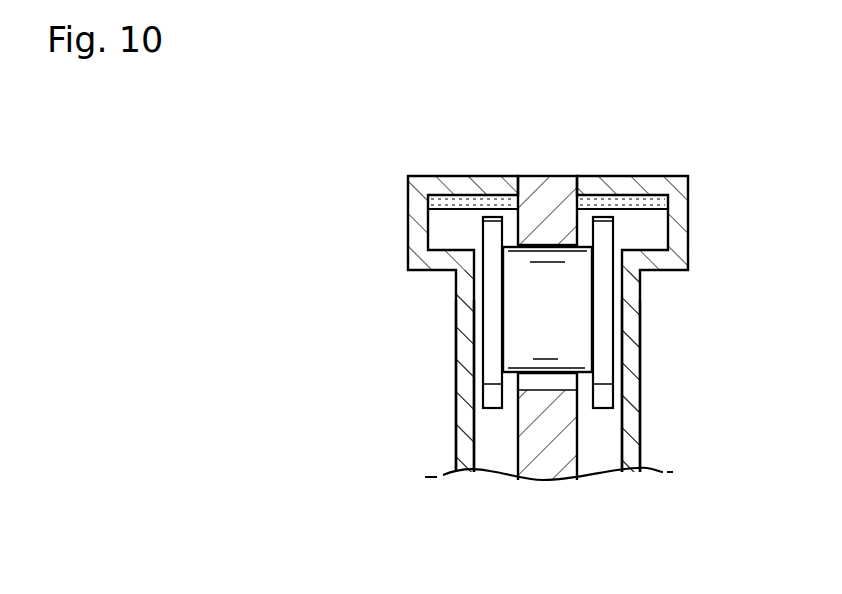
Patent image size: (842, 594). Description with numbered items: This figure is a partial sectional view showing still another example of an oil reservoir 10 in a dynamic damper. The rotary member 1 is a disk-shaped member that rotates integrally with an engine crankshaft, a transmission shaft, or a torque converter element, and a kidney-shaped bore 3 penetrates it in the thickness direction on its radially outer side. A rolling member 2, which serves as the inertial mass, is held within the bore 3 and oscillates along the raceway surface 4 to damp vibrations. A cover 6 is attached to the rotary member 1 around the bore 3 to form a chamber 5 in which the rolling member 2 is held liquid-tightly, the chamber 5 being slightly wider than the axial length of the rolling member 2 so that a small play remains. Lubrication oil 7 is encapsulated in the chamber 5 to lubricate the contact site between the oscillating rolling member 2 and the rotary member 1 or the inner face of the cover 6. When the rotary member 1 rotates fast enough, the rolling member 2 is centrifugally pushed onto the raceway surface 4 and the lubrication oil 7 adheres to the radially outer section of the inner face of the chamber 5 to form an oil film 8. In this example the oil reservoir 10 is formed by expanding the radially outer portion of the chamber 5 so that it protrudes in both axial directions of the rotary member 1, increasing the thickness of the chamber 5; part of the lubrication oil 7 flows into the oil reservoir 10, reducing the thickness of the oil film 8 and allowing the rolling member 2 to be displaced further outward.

The oil reservoir 10 is at (406, 243).
The cover 6 is at (688, 252).
The chamber 5 is at (607, 432).
The lubrication oil 7 is at (450, 203).
The oil film 8 is at (637, 210).
The raceway surface 4 is at (558, 246).
The rolling member 2 is at (482, 333).
The bore 3 is at (538, 383).
The rotary member 1 is at (560, 433).